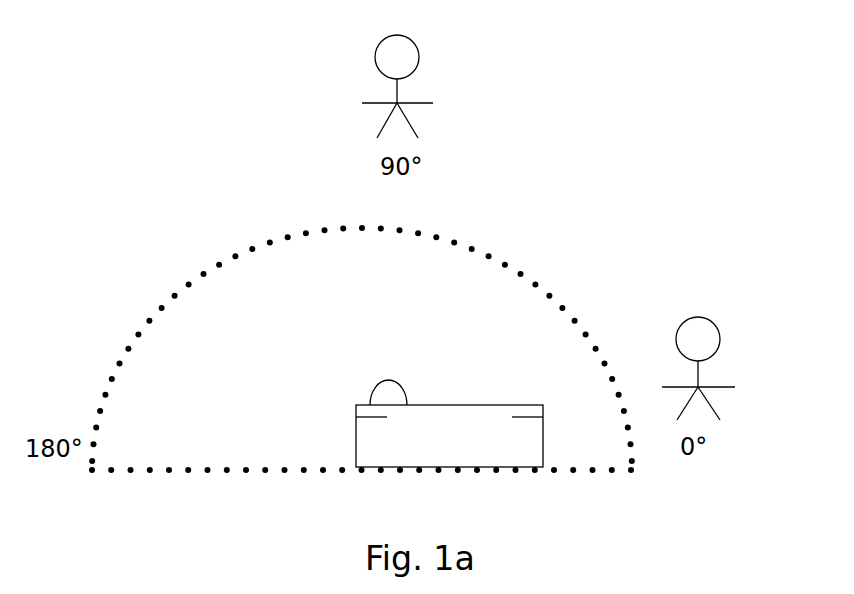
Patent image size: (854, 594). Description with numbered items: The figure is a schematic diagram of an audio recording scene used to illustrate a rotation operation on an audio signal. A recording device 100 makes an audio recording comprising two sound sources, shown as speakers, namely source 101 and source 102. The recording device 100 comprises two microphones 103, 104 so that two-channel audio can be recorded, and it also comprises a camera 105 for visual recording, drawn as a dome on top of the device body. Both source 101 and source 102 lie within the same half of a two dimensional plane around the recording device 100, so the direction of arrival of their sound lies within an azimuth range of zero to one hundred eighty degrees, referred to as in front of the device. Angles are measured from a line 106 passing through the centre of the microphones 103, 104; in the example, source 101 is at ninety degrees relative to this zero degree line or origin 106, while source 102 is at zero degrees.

The recording device 100 is at (461, 454).
The source 101 is at (420, 57).
The source 102 is at (720, 338).
The microphone 103 is at (357, 408).
The microphone 104 is at (528, 408).
The camera 105 is at (387, 380).
The line 106 is at (273, 471).